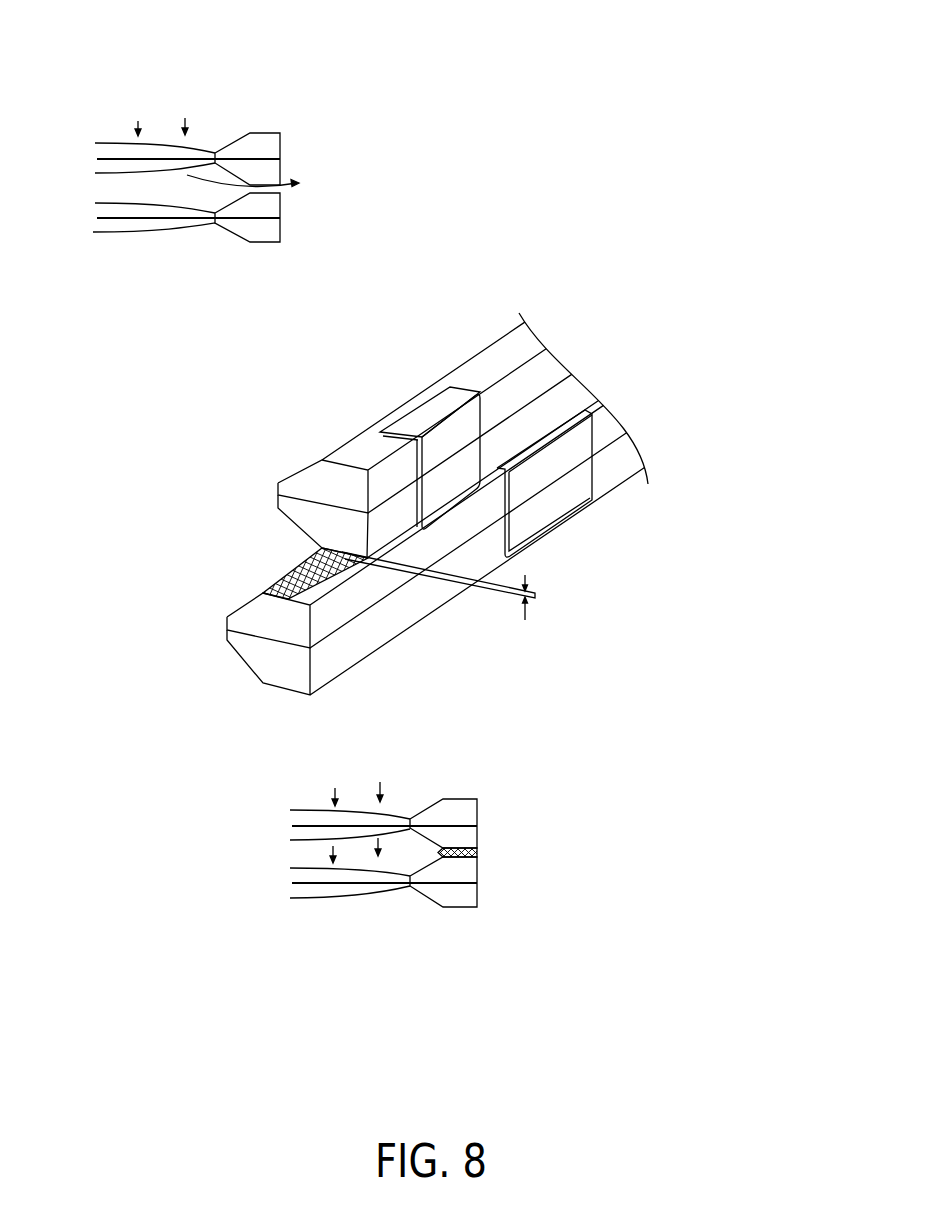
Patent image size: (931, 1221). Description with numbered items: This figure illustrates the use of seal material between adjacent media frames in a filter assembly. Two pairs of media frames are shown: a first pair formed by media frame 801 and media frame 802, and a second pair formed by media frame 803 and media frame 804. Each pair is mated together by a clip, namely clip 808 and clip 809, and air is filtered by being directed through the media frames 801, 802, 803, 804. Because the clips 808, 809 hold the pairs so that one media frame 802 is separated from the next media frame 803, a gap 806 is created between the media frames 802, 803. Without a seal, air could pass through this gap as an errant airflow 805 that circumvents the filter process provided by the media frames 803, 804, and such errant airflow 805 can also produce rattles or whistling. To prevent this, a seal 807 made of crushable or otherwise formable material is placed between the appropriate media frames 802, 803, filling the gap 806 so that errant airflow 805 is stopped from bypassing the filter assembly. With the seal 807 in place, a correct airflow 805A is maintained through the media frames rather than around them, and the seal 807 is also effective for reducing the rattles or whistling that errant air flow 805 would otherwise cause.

The media frame 801 is at (257, 143).
The media frame 802 is at (270, 180).
The media frame 803 is at (282, 207).
The media frame 804 is at (280, 238).
The errant airflow 805 is at (196, 159).
The correct airflow 805A is at (610, 847).
The gap 806 is at (540, 598).
The seal 807 is at (287, 577).
The clip 808 is at (430, 458).
The clip 809 is at (544, 483).